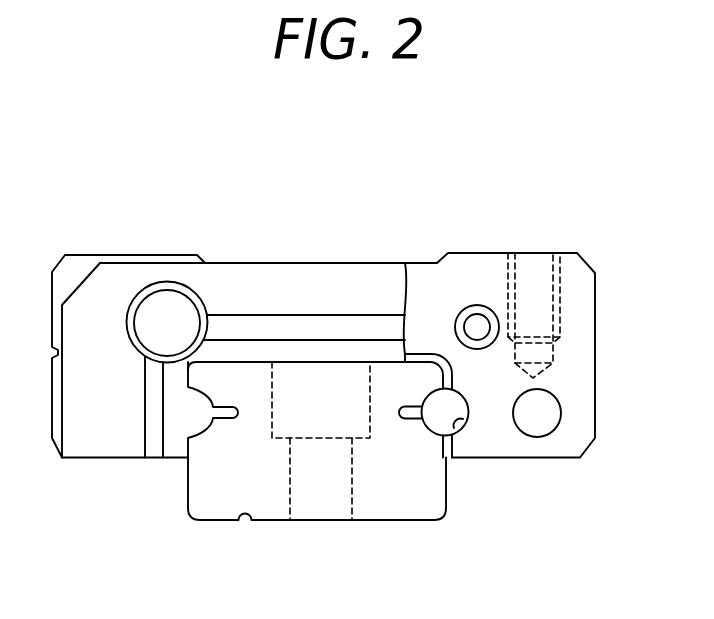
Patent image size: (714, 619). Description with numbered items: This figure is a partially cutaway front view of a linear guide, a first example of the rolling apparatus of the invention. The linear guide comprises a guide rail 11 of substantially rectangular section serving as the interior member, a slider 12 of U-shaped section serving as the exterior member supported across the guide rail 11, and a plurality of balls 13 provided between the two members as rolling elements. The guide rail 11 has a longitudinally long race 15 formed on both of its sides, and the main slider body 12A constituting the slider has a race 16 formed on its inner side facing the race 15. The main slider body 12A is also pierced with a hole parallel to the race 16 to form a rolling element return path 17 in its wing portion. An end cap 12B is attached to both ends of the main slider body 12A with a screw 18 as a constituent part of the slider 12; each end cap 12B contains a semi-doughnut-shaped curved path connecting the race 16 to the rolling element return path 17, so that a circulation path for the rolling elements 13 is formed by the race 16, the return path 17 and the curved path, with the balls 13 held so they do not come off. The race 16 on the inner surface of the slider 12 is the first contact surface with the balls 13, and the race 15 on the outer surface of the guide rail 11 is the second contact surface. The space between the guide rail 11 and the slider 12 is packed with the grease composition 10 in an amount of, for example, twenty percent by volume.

The grease composition 10 is at (449, 363).
The guide rail 11 is at (383, 498).
The slider 12 is at (588, 271).
The main slider body 12A is at (477, 268).
The end cap 12B is at (178, 270).
The ball 13 is at (434, 421).
The race 15 is at (438, 396).
The race 16 is at (454, 421).
The rolling element return path 17 is at (556, 412).
The screw 18 is at (140, 322).